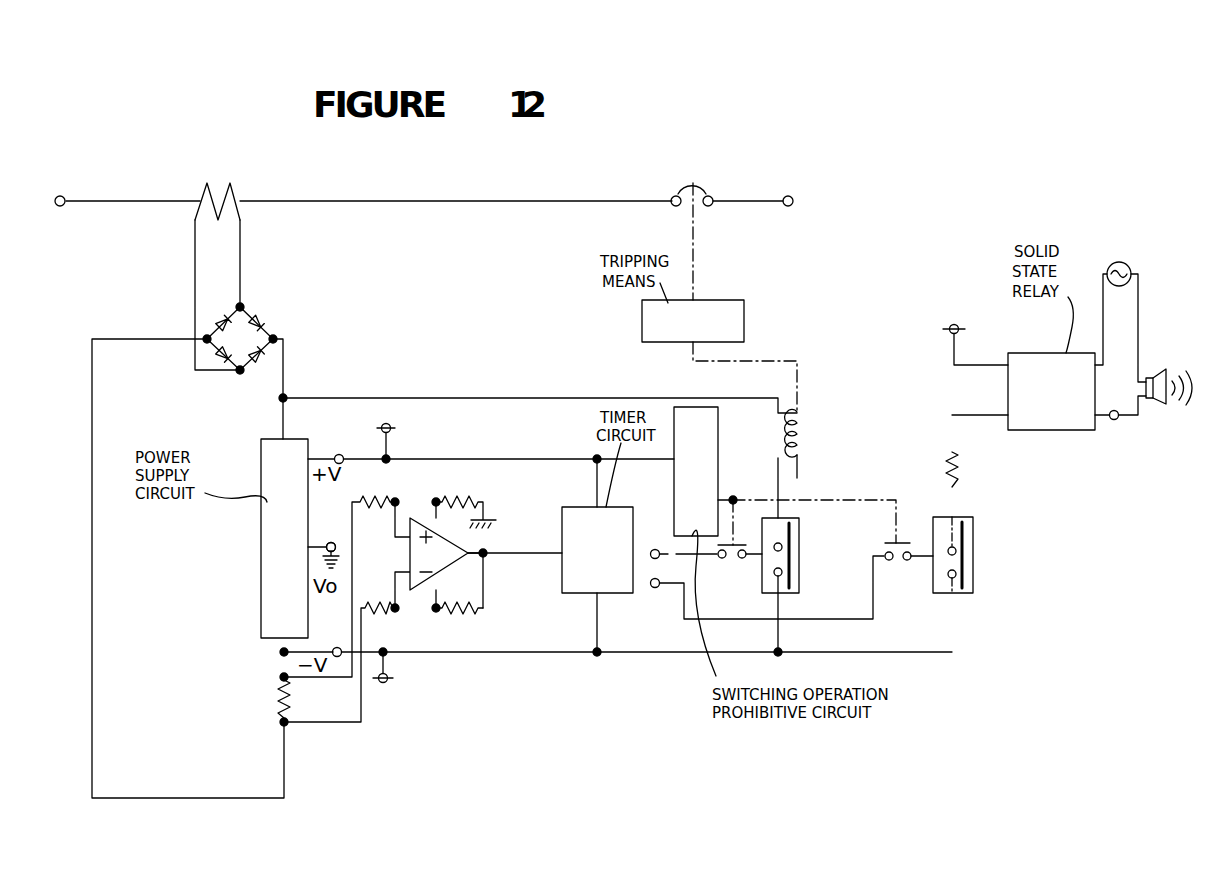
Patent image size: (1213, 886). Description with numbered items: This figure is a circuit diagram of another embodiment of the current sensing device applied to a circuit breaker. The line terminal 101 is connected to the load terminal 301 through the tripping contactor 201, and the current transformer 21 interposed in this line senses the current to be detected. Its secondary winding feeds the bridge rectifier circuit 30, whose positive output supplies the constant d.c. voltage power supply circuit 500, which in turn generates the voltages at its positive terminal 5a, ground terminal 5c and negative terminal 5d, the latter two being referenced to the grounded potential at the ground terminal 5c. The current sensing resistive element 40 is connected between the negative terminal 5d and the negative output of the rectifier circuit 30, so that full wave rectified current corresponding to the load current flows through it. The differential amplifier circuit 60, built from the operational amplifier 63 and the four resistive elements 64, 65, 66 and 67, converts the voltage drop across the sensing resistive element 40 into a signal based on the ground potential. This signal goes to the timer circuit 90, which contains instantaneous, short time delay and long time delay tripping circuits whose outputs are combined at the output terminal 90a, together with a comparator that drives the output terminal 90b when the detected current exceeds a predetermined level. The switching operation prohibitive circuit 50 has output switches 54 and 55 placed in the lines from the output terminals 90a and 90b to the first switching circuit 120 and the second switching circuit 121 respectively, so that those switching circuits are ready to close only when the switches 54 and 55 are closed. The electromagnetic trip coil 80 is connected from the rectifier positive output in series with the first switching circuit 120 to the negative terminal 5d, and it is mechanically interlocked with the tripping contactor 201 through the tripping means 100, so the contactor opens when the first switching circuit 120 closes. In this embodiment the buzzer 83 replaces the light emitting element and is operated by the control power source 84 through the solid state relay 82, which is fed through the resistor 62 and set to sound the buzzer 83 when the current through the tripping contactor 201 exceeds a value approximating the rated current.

The load terminal 301 is at (65, 198).
The current transformer 21 is at (234, 191).
The bridge rectifier circuit 30 is at (238, 338).
The tripping contactor 201 is at (672, 195).
The line terminal 101 is at (791, 196).
The tripping means 100 is at (745, 323).
The control power source 84 is at (1123, 262).
The solid state relay 82 is at (1044, 353).
The buzzer 83 is at (1158, 405).
The positive terminal 5a is at (964, 306).
The constant d.c. voltage power supply circuit 500 is at (262, 571).
The resistive element 64 is at (373, 498).
The differential amplifier circuit 60 is at (426, 518).
The resistive element 66 is at (460, 496).
The timer circuit 90 is at (572, 506).
The switching operation prohibitive circuit 50 is at (720, 464).
The electromagnetic trip coil 80 is at (804, 428).
The resistor 62 is at (959, 464).
The ground terminal 5c is at (336, 548).
The operational amplifier 63 is at (464, 560).
The output terminal 90a is at (652, 548).
The output switch 54 is at (724, 560).
The first switching circuit 120 is at (800, 559).
The output switch 55 is at (898, 562).
The second switching circuit 121 is at (974, 534).
The resistive element 65 is at (384, 612).
The resistive element 67 is at (466, 612).
The negative terminal 5d is at (387, 682).
The output terminal 90b is at (655, 590).
The current sensing resistive element 40 is at (279, 698).